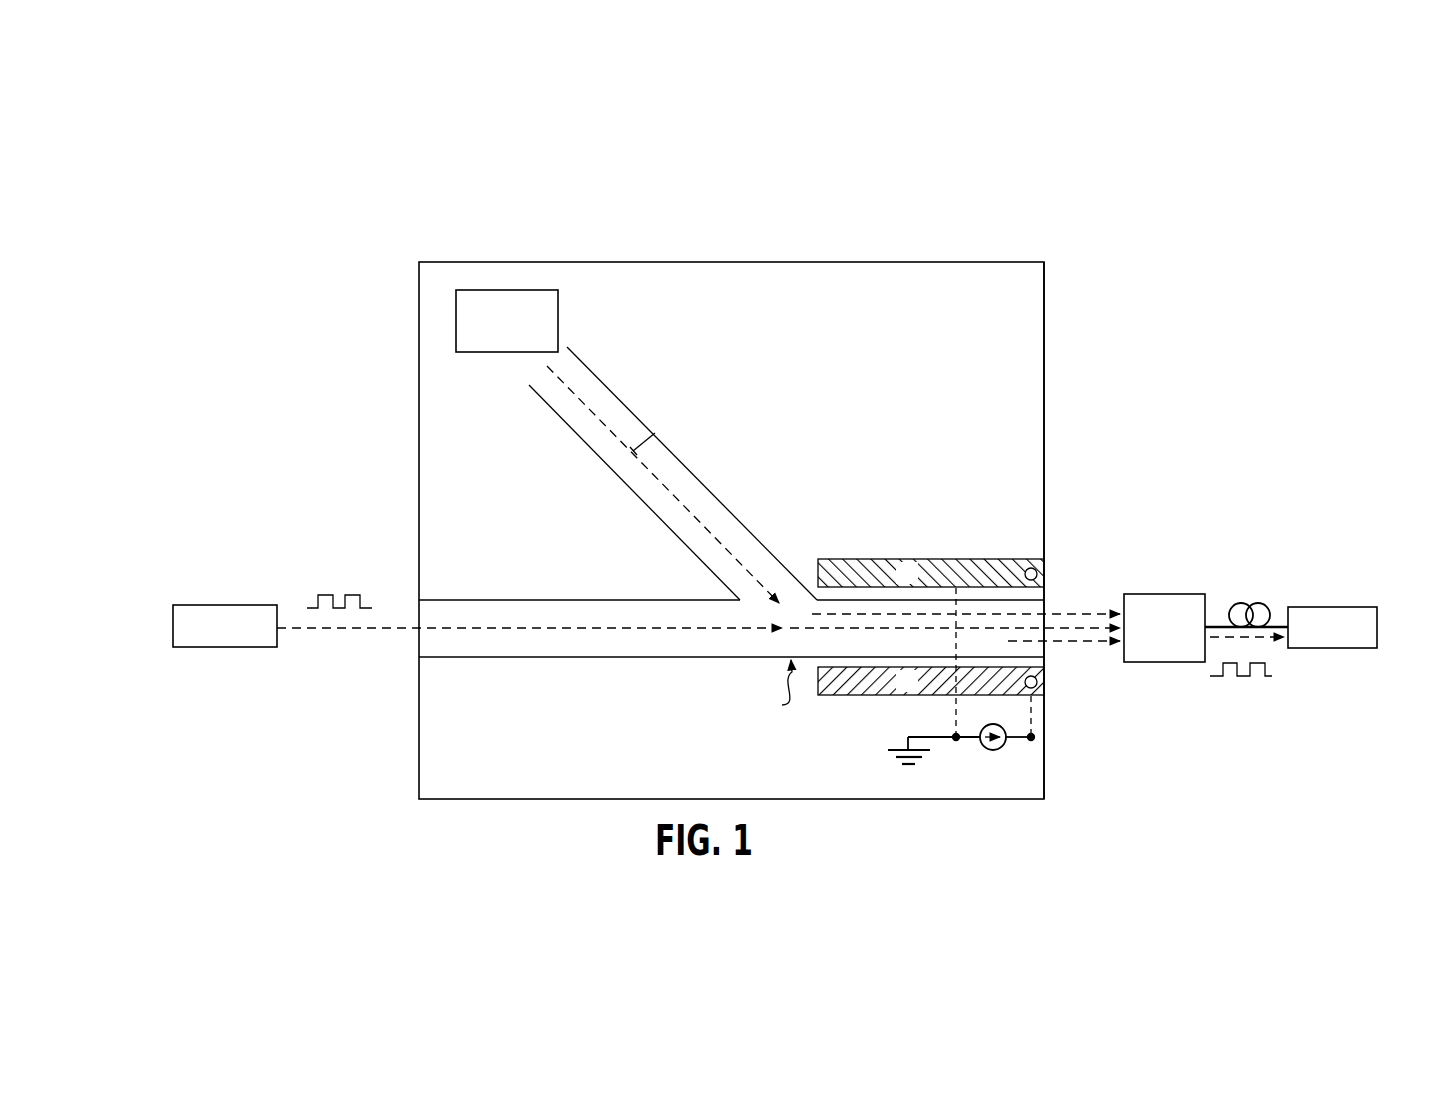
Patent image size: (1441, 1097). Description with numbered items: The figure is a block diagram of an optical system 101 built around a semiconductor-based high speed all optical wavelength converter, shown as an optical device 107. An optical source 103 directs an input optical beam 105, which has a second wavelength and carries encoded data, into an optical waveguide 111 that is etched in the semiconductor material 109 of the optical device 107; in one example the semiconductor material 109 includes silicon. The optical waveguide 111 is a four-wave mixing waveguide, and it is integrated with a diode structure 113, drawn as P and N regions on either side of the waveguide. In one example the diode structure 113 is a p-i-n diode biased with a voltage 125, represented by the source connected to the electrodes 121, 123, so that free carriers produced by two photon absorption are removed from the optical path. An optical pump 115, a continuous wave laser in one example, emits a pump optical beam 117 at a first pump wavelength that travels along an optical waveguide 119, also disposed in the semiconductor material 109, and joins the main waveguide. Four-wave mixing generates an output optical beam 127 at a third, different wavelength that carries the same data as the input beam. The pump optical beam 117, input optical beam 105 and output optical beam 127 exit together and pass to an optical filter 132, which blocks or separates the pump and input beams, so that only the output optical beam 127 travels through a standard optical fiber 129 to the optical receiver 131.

The system 101 is at (1139, 179).
The optical source 103 is at (173, 625).
The input optical beam 105 is at (305, 632).
The optical device 107 is at (927, 249).
The semiconductor material 109 is at (1038, 340).
The optical waveguide 111 is at (710, 718).
The diode structure 113 is at (945, 558).
The optical pump 115 is at (558, 322).
The pump optical beam 117 is at (655, 433).
The optical waveguide 119 is at (693, 477).
The N-doped region / electrode 121 is at (1044, 577).
The electrical contact 123 is at (1046, 684).
The voltage 125 is at (1001, 750).
The output optical beam 127 is at (1062, 641).
The optical fiber 129 is at (1264, 603).
The optical receiver 131 is at (1377, 625).
The optical filter 132 is at (1165, 663).